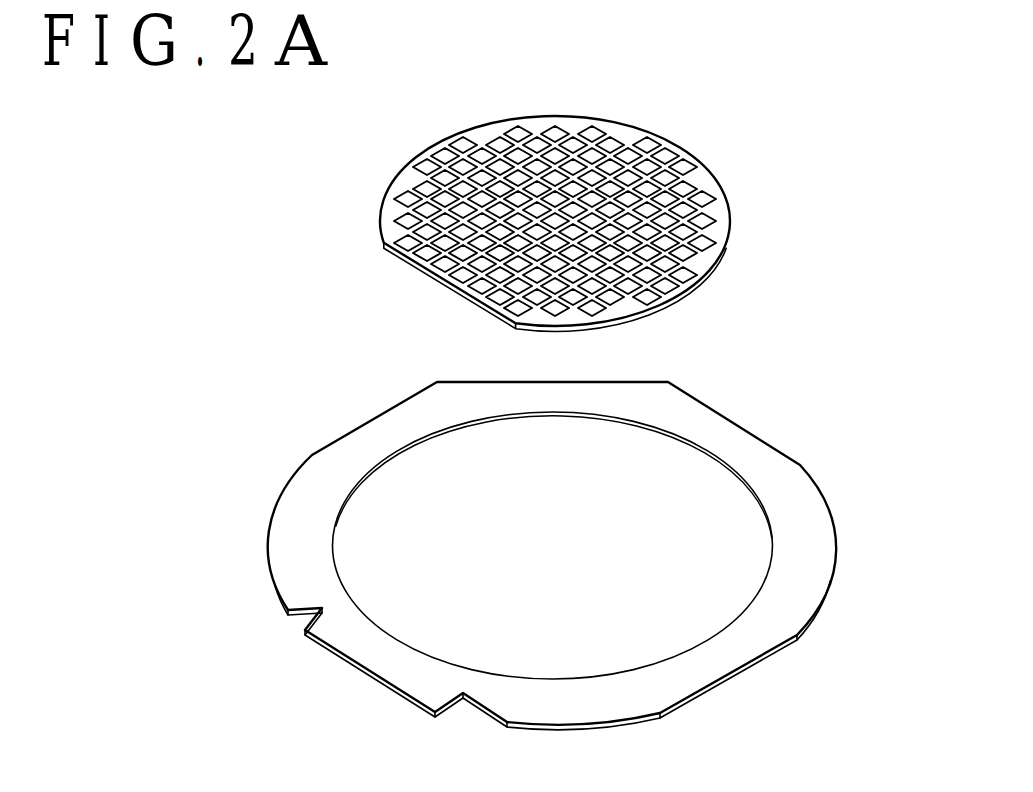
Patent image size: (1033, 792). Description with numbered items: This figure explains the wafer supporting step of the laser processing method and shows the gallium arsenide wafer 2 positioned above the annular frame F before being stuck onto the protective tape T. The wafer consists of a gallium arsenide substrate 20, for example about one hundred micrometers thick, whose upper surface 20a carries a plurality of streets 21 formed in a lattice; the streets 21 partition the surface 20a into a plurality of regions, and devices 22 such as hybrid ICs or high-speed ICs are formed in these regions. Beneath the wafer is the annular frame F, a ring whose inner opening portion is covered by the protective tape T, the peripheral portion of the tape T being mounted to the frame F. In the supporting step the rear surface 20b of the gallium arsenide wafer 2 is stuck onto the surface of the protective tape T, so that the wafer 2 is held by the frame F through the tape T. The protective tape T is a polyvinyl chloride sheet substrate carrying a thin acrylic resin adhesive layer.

The gallium arsenide wafer 2 is at (581, 198).
The gallium arsenide substrate 20 is at (581, 217).
The surface 20a is at (657, 143).
The rear surface 20b is at (667, 303).
The streets 21 is at (578, 195).
The devices 22 is at (566, 130).
The protective tape T is at (397, 464).
The annular frame F is at (561, 550).